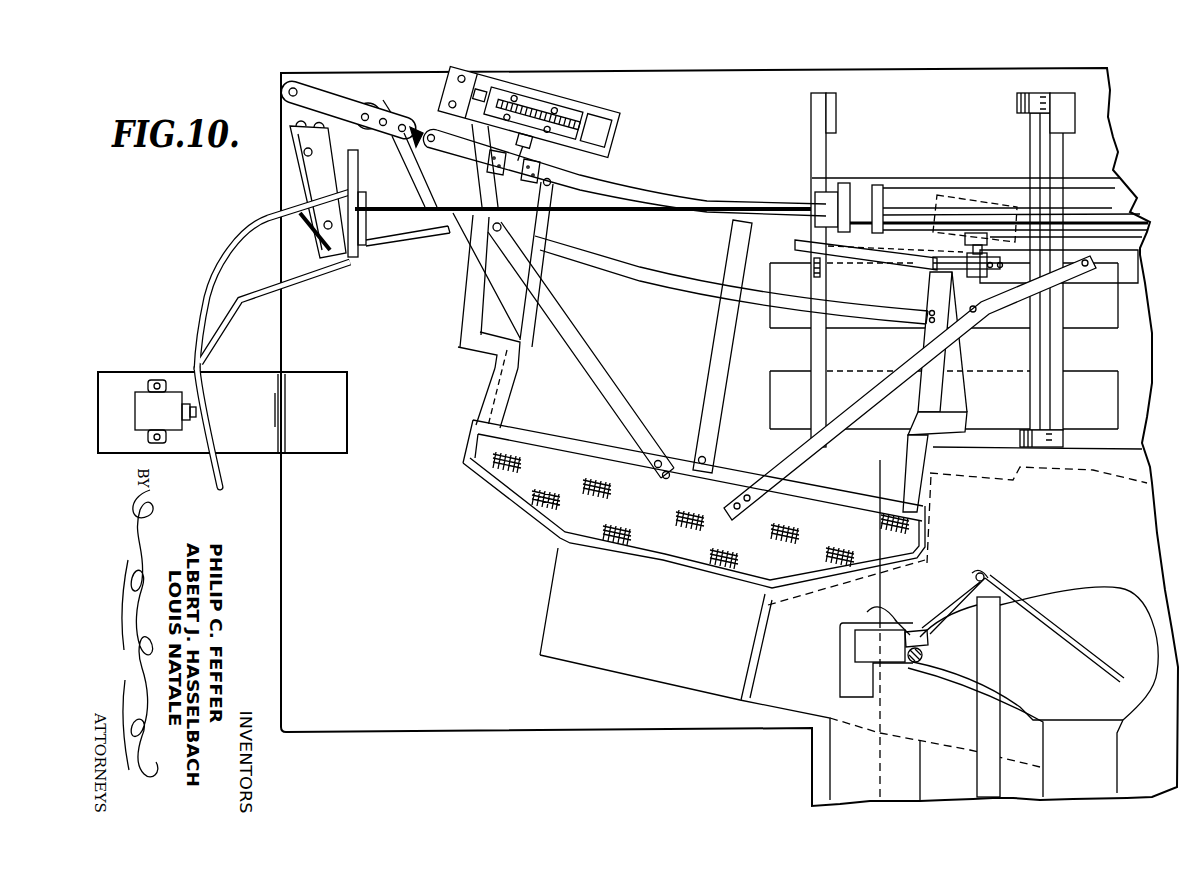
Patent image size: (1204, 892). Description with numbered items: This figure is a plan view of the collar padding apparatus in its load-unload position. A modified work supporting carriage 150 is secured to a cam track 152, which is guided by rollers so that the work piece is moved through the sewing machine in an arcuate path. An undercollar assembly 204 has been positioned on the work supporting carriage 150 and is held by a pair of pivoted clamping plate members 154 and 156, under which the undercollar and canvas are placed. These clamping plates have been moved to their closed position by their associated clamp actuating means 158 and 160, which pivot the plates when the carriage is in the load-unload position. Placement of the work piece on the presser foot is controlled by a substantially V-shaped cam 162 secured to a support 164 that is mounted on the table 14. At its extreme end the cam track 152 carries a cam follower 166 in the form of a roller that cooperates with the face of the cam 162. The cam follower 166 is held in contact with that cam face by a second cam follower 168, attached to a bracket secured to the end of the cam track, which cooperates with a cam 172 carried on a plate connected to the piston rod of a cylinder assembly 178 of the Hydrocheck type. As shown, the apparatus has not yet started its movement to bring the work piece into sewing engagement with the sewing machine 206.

The table 14 is at (530, 732).
The work supporting carriage 150 is at (680, 331).
The cam track 152 is at (640, 192).
The pivoted plate member 154 is at (567, 443).
The pivoted plate member 156 is at (815, 503).
The clamp actuating means 158 is at (581, 104).
The clamp actuating means 160 is at (978, 194).
The V-shaped cam 162 is at (400, 237).
The support 164 is at (293, 147).
The cam follower 166 is at (364, 87).
The cam follower 168 is at (280, 112).
The cam 172 is at (207, 277).
The cylinder assembly 178 is at (1082, 196).
The undercollar assembly 204 is at (547, 510).
The sewing machine 206 is at (1120, 625).